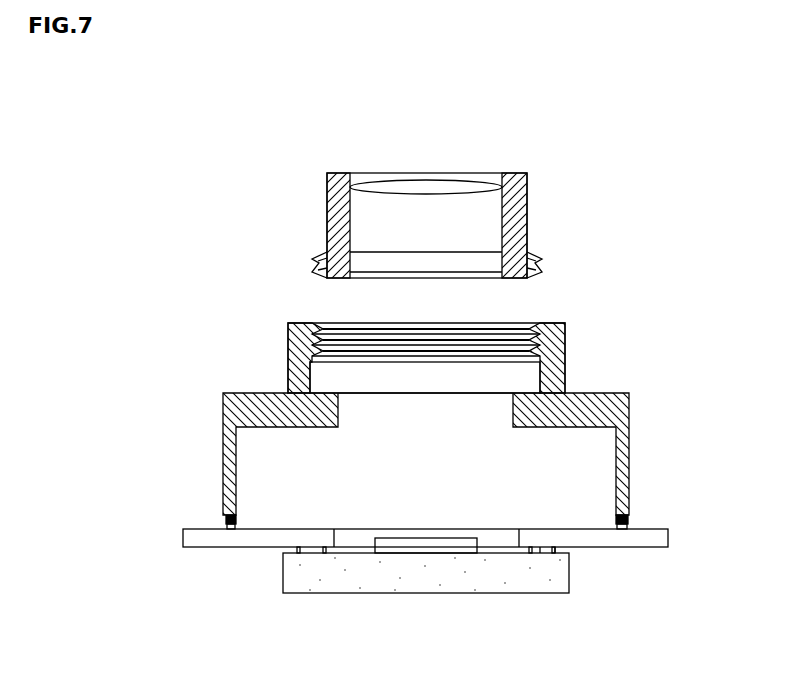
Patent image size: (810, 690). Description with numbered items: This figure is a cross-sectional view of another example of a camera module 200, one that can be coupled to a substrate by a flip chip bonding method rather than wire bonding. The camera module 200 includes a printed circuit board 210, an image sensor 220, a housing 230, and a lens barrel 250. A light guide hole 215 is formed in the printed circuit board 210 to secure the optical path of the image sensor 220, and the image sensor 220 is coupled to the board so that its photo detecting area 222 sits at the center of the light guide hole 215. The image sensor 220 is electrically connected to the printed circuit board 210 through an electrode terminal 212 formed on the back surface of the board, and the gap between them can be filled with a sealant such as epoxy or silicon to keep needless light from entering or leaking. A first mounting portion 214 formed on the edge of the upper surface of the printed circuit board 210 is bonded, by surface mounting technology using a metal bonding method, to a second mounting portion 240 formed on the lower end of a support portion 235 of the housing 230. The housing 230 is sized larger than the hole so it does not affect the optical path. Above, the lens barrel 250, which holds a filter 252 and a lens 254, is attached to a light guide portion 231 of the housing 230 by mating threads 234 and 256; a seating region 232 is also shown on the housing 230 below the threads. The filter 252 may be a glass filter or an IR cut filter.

The camera module 200 is at (718, 113).
The printed circuit board 210 is at (231, 547).
The electrode terminal 212 is at (545, 547).
The first mounting portion 214 is at (620, 547).
The light guide hole 215 is at (349, 538).
The image sensor 220 is at (520, 575).
The photo detecting area 222 is at (423, 547).
The housing 230 is at (205, 407).
The light guide portion 231 is at (290, 340).
The seating groove 232 is at (535, 378).
The threads 234 is at (540, 330).
The support portion 235 is at (630, 455).
The second mounting portion 240 is at (226, 520).
The lens barrel 250 is at (338, 222).
The filter 252 is at (475, 262).
The lens 254 is at (427, 186).
The threads 256 is at (540, 267).